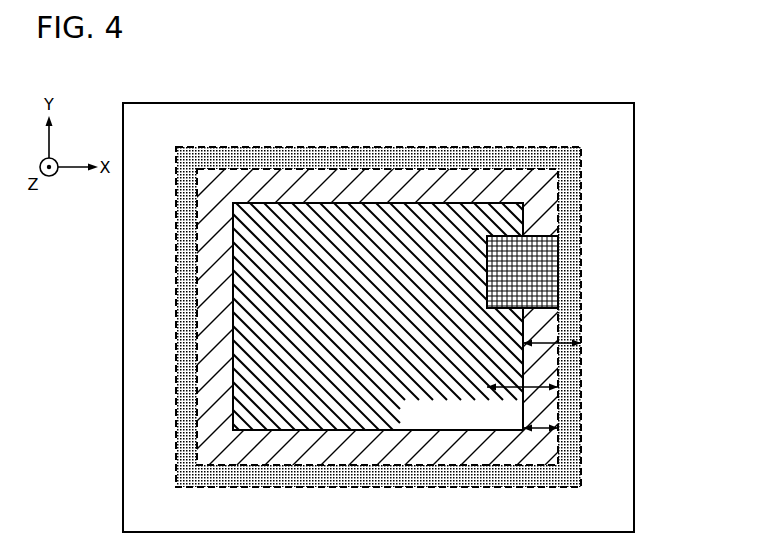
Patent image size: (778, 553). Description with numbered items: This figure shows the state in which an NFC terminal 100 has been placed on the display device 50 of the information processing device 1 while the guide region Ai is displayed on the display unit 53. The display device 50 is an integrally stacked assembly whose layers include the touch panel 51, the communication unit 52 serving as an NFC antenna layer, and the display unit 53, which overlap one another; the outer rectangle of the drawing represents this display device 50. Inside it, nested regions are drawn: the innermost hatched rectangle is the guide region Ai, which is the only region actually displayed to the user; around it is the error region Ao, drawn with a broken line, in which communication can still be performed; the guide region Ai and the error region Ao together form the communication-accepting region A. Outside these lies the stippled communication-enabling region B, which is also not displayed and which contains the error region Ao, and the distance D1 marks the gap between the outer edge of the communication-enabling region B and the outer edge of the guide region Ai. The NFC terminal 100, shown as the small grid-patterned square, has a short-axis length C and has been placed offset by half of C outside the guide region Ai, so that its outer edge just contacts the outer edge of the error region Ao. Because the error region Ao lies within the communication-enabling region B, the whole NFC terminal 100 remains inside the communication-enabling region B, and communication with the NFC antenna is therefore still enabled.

The information processing device 1 is at (650, 64).
The display device 50 is at (378, 297).
The touch panel 51 is at (378, 317).
The communication unit 52 is at (378, 317).
The display unit 53 is at (398, 103).
The NFC terminal 100 is at (538, 236).
The communication-accepting region A is at (389, 276).
The guide region Ai is at (292, 206).
The error region Ao is at (338, 175).
The communication-enabling region B is at (213, 147).
The average value of the length of the NFC terminals C is at (540, 389).
The distance D1 is at (540, 345).